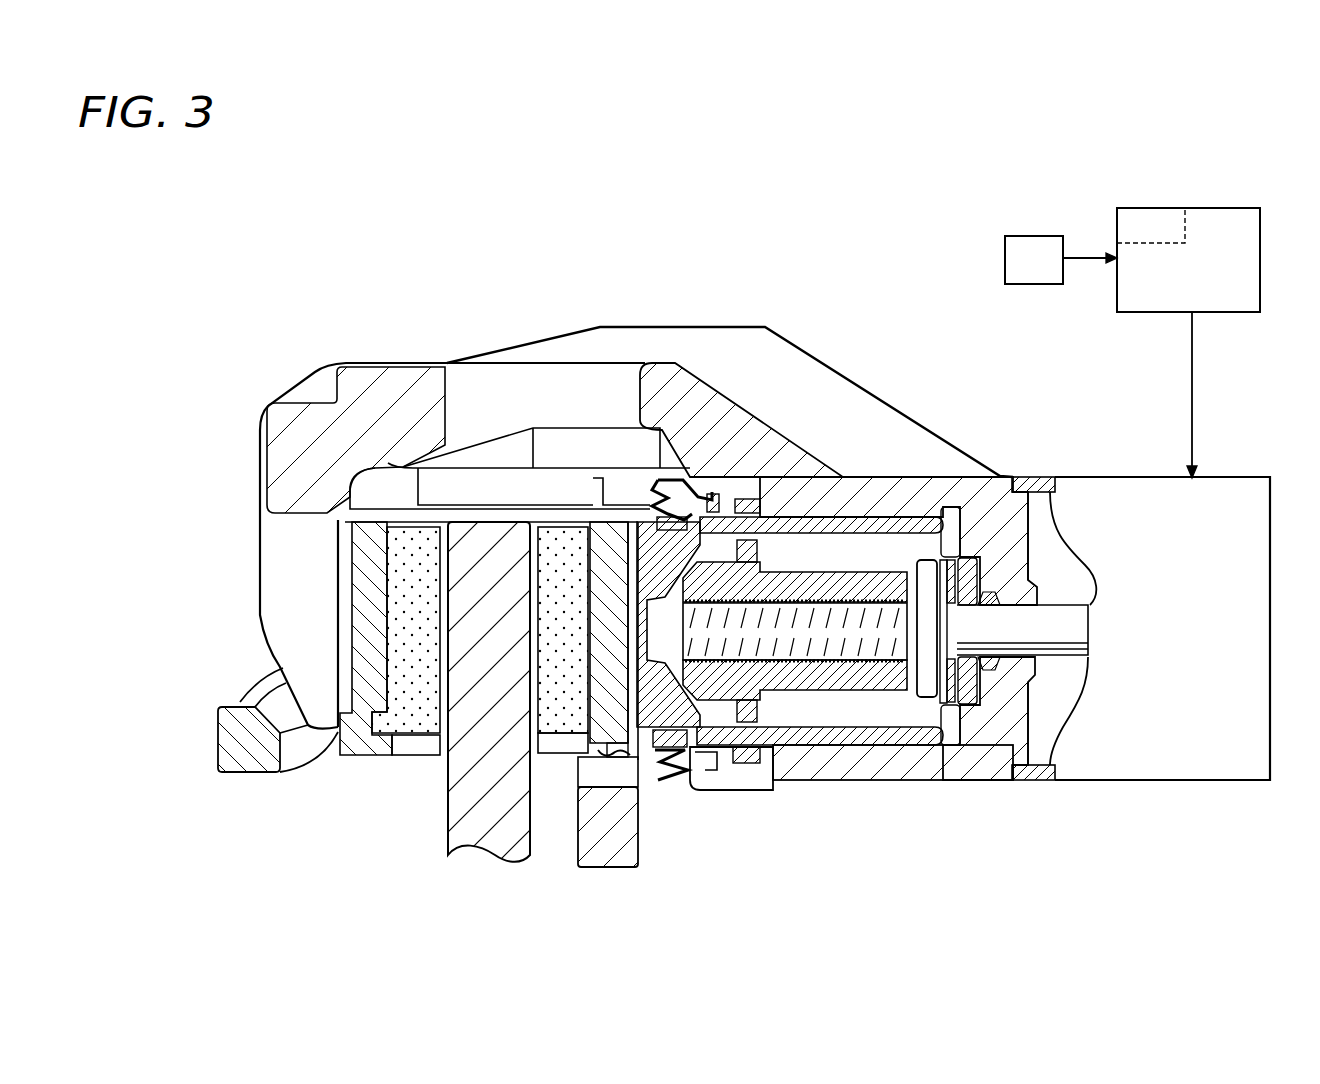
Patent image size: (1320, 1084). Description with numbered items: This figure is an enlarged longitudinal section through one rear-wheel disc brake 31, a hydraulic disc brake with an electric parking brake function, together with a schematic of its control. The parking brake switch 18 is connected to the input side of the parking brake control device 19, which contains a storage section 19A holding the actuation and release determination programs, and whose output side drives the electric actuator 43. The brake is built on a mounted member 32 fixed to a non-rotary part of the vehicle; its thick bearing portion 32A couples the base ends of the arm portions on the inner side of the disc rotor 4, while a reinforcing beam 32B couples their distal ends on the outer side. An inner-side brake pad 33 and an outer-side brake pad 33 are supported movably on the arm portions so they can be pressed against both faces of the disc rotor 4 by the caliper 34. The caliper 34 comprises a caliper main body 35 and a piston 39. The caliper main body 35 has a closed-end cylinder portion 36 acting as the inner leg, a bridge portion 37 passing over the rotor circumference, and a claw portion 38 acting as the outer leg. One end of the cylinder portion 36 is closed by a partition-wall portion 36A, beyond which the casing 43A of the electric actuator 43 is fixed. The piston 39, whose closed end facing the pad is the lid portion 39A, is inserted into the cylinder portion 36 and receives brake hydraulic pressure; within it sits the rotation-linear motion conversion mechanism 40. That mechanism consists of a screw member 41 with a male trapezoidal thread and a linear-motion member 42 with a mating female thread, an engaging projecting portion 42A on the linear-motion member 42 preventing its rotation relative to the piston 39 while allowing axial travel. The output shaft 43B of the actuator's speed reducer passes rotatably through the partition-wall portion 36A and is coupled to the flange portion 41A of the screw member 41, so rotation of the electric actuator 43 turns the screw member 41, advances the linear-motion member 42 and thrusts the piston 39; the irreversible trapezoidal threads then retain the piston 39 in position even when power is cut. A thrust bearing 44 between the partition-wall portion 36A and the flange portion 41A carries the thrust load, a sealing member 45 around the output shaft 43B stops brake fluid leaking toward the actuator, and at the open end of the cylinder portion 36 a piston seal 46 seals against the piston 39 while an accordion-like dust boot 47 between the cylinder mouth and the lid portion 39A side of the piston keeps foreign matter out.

The disc rotor 4 is at (470, 775).
The parking brake switch 18 is at (1005, 260).
The parking brake control device 19 is at (1260, 258).
The storage section 19A is at (1143, 222).
The disc brake 31 is at (693, 318).
The mounted member 32 is at (246, 780).
The bearing portion 32A is at (610, 835).
The reinforcing beam 32B is at (265, 750).
The brake pad 33 is at (400, 630).
The caliper 34 is at (362, 355).
The caliper main body 35 is at (790, 372).
The cylinder portion 36 is at (885, 520).
The partition-wall portion 36A is at (985, 560).
The bridge portion 37 is at (520, 365).
The claw portion 38 is at (293, 592).
The piston 39 is at (862, 520).
The lid portion 39A is at (643, 580).
The rotation-linear motion conversion mechanism 40 is at (816, 560).
The screw member 41 is at (813, 662).
The flange portion 41A is at (928, 679).
The linear-motion member 42 is at (863, 679).
The engaging projecting portion 42A is at (768, 735).
The electric actuator 43 is at (1208, 792).
The casing 43A is at (1233, 497).
The output shaft 43B is at (1050, 615).
The thrust bearing 44 is at (950, 705).
The sealing member 45 is at (1015, 745).
The piston seal 46 is at (748, 495).
The dust boot 47 is at (668, 778).